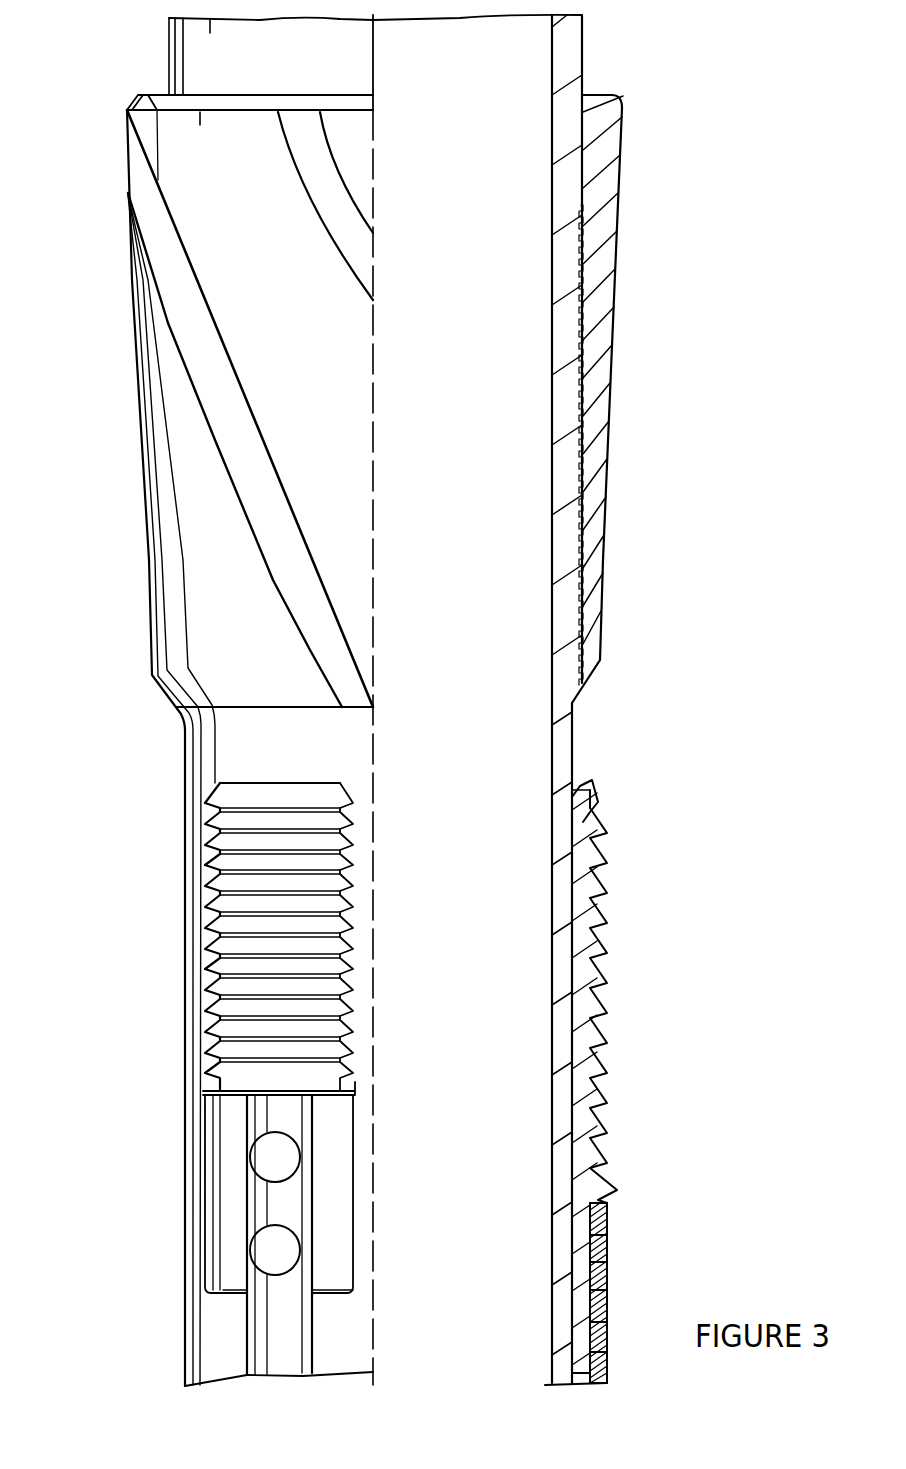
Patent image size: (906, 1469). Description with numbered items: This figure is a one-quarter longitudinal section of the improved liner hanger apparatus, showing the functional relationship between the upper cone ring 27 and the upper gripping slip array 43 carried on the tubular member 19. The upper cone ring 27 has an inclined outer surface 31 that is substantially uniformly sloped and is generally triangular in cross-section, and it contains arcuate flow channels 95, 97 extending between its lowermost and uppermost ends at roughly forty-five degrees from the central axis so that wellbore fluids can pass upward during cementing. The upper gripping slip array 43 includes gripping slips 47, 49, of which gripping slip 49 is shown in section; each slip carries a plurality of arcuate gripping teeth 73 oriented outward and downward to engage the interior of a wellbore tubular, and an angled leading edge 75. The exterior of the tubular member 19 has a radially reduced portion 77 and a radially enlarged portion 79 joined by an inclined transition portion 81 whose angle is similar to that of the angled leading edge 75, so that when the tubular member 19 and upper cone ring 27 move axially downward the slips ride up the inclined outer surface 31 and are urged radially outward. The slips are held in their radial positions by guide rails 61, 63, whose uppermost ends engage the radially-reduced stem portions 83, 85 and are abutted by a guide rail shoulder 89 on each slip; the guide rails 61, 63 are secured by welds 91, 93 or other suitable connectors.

The tubular member 19 is at (560, 742).
The upper cone ring 27 is at (198, 508).
The inclined outer surface 31 is at (619, 207).
The upper gripping slip array 43 is at (150, 980).
The gripping slip 47 is at (232, 865).
The gripping slip 49 is at (590, 950).
The guide rail 61 is at (275, 1113).
The guide rail 63 is at (603, 1231).
The arcuate gripping teeth 73 is at (604, 866).
The angled leading edge 75 is at (578, 788).
The radially reduced portion 77 is at (565, 1085).
The radially enlarged portion 79 is at (565, 628).
The inclined transition portion 81 is at (573, 703).
The radially-reduced stem portion 83 is at (232, 1232).
The radially-reduced stem portion 85 is at (593, 1324).
The guide rail shoulder 89 is at (603, 1197).
The weld 91 is at (607, 1267).
The weld 93 is at (607, 1363).
The arcuate flow channel 95 is at (175, 292).
The arcuate flow channel 97 is at (320, 200).